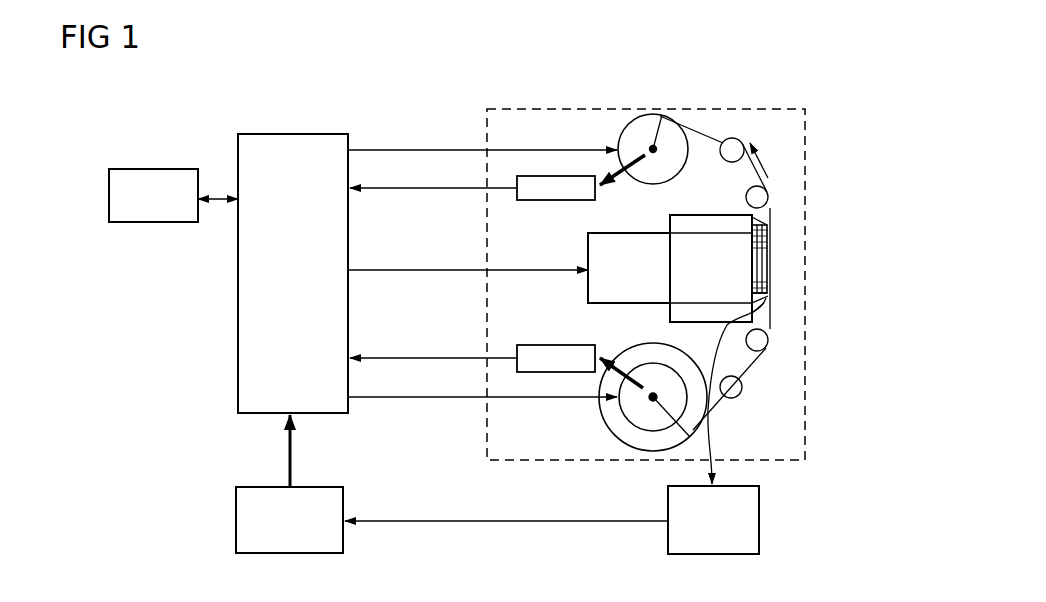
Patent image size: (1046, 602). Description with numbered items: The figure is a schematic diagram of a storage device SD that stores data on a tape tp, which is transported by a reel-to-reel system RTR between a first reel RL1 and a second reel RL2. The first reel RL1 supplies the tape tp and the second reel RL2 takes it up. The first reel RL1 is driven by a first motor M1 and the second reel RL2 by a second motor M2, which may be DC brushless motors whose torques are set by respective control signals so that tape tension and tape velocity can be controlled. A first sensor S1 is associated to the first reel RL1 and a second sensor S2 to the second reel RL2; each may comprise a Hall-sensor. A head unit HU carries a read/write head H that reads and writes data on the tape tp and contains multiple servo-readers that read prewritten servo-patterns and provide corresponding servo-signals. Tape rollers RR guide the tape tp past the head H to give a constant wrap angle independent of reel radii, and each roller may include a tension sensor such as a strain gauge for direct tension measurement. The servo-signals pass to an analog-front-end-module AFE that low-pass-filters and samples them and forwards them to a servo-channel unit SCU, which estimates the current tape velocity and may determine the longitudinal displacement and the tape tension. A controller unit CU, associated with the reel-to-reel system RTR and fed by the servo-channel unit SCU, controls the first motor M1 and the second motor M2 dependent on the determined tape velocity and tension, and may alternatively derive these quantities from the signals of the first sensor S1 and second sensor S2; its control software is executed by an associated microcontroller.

The controller unit CU is at (238, 390).
The servo-channel unit SCU is at (258, 545).
The storage device SD is at (186, 446).
The analog-front-end-module AFE is at (698, 543).
The reel-to-reel system RTR is at (788, 109).
The first reel RL1 is at (617, 415).
The second reel RL2 is at (621, 137).
The first motor M1 is at (653, 400).
The second motor M2 is at (652, 152).
The first sensor S1 is at (538, 367).
The second sensor S2 is at (543, 192).
The tape rollers RR is at (727, 158).
The read/write head H is at (768, 236).
The head unit HU is at (664, 314).
The tape tp is at (771, 306).